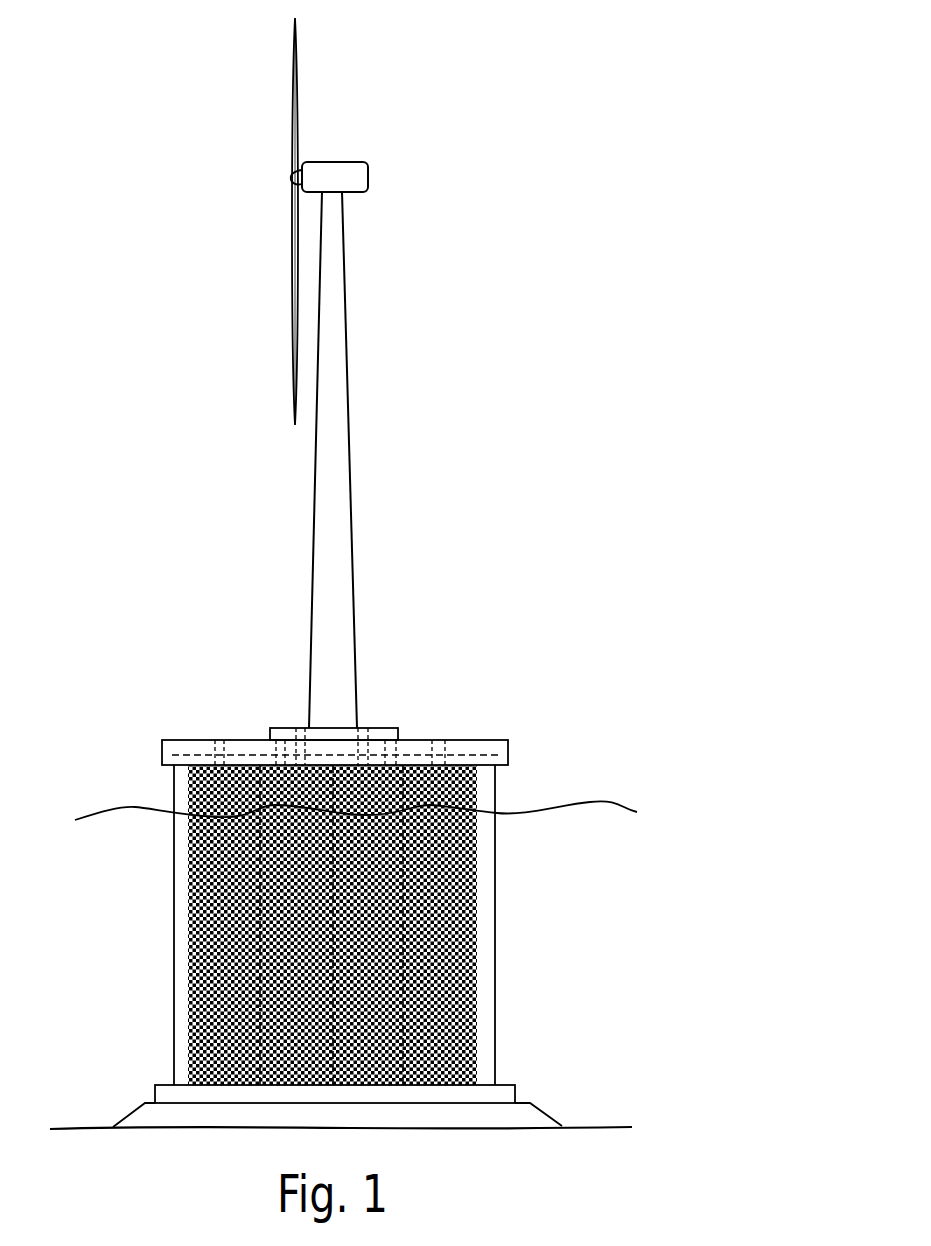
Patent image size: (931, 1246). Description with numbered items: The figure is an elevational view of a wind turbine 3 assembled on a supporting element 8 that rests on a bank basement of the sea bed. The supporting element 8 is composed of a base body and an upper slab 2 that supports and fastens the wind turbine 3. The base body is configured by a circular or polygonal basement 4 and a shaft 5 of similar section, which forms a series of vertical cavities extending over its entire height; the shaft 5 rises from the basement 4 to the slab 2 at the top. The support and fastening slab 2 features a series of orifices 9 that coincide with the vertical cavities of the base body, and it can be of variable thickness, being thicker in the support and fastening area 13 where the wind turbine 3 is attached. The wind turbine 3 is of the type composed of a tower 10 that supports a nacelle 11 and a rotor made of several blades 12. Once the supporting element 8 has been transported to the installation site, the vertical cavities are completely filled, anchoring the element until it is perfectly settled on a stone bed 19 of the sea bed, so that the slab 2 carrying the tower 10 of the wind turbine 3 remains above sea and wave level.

The slab 2 is at (175, 738).
The wind turbine 3 is at (366, 450).
The basement 4 is at (180, 1095).
The shaft 5 is at (177, 920).
The supporting element 8 is at (522, 788).
The orifices 9 is at (217, 743).
The tower 10 is at (342, 510).
The nacelle 11 is at (363, 178).
The blades 12 is at (296, 147).
The support and fastening area 13 is at (388, 728).
The stone bed 19 is at (143, 1115).